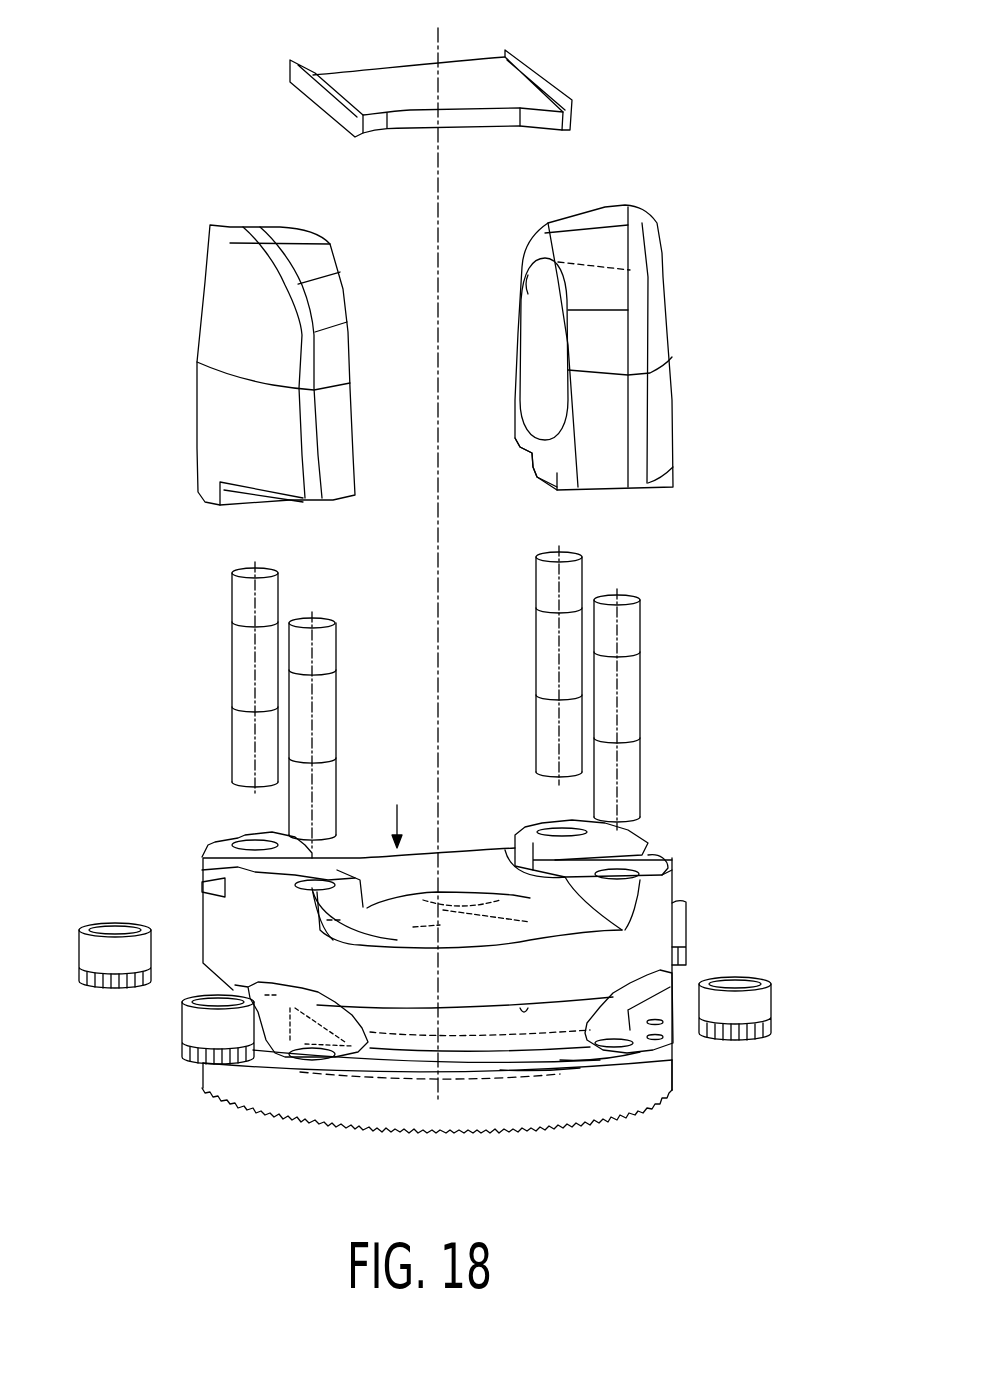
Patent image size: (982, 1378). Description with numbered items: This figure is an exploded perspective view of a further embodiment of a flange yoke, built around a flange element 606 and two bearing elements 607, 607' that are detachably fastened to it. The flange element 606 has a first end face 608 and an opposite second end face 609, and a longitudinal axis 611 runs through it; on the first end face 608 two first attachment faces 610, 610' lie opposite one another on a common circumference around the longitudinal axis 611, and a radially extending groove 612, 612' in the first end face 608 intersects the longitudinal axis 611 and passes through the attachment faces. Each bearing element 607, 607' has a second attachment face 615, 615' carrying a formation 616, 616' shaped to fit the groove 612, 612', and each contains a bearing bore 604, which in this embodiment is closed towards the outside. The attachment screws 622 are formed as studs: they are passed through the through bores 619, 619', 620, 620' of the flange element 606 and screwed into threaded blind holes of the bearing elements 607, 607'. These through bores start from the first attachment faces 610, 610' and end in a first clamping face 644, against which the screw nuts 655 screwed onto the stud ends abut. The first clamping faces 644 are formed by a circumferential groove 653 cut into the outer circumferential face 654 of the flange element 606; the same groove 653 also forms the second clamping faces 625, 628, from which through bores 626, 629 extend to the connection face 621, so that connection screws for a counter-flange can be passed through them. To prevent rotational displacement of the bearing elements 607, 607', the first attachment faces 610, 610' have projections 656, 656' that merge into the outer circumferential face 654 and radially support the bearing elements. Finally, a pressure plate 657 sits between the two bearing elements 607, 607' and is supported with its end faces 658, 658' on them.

The bearing bore 604 is at (530, 282).
The flange element 606 is at (660, 893).
The bearing element 607 is at (598, 372).
The bearing element 607' is at (248, 388).
The first end face 608 is at (402, 808).
The second end face 609 is at (463, 1132).
The first attachment face 610 is at (556, 837).
The first attachment face 610' is at (355, 876).
The longitudinal axis 611 is at (438, 163).
The radially extending groove 612 is at (641, 840).
The radially extending groove 612' is at (241, 853).
The second attachment face 615 is at (597, 506).
The second attachment face 615' is at (294, 513).
The formation 616 is at (513, 466).
The formation 616' is at (259, 516).
The through bore 619 is at (649, 856).
The through bore 619' is at (286, 902).
The through bore 620 is at (573, 828).
The through bore 620' is at (242, 822).
The connection face 621 is at (648, 1110).
The attachment screw 622 is at (632, 693).
The second clamping face 625 is at (660, 1020).
The through bore 626 is at (670, 1037).
The second clamping face 628 is at (598, 1060).
The through bore 629 is at (525, 1070).
The first clamping face 644 is at (302, 992).
The circumferential groove 653 is at (522, 1013).
The outer circumferential face 654 is at (680, 902).
The screw nut 655 is at (772, 1000).
The projection 656 is at (699, 853).
The projection 656' is at (176, 880).
The pressure plate 657 is at (470, 87).
The end face 658 is at (578, 90).
The end face 658' is at (300, 99).